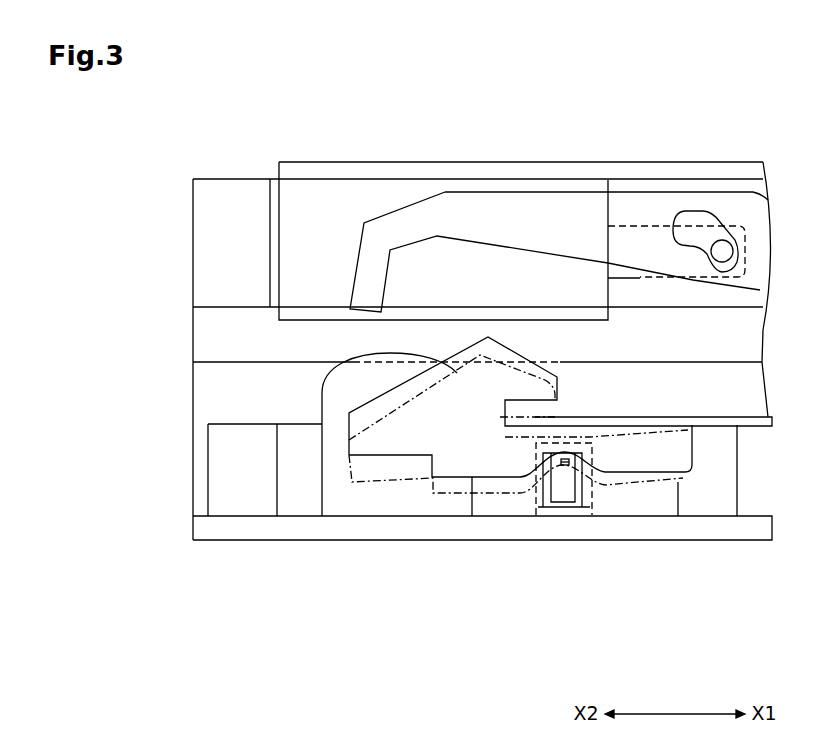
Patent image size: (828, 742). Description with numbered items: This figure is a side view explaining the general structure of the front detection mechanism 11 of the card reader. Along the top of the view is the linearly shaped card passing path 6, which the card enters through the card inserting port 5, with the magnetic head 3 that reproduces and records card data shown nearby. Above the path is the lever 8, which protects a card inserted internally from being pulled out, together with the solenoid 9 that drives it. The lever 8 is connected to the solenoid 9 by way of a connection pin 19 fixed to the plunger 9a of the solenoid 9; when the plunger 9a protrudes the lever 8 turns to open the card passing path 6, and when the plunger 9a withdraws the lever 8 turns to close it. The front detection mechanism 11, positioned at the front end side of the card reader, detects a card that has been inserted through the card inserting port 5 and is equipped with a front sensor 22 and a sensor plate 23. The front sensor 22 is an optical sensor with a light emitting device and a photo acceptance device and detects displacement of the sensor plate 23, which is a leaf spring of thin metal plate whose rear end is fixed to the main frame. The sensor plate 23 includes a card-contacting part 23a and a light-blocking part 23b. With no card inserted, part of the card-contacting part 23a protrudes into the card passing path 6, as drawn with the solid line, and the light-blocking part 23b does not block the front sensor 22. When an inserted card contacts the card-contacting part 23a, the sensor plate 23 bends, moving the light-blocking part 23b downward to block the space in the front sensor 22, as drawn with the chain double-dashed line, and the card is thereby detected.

The magnetic head 3 is at (322, 396).
The card inserting port 5 is at (152, 343).
The card passing path 6 is at (729, 345).
The lever 8 is at (530, 192).
The solenoid 9 is at (376, 178).
The plunger 9a is at (643, 223).
The front detection mechanism 11 is at (457, 592).
The connection pin 19 is at (715, 224).
The front sensor 22 is at (590, 497).
The sensor plate 23 is at (408, 455).
The card-contacting part 23a is at (537, 375).
The light-blocking part 23b is at (495, 477).